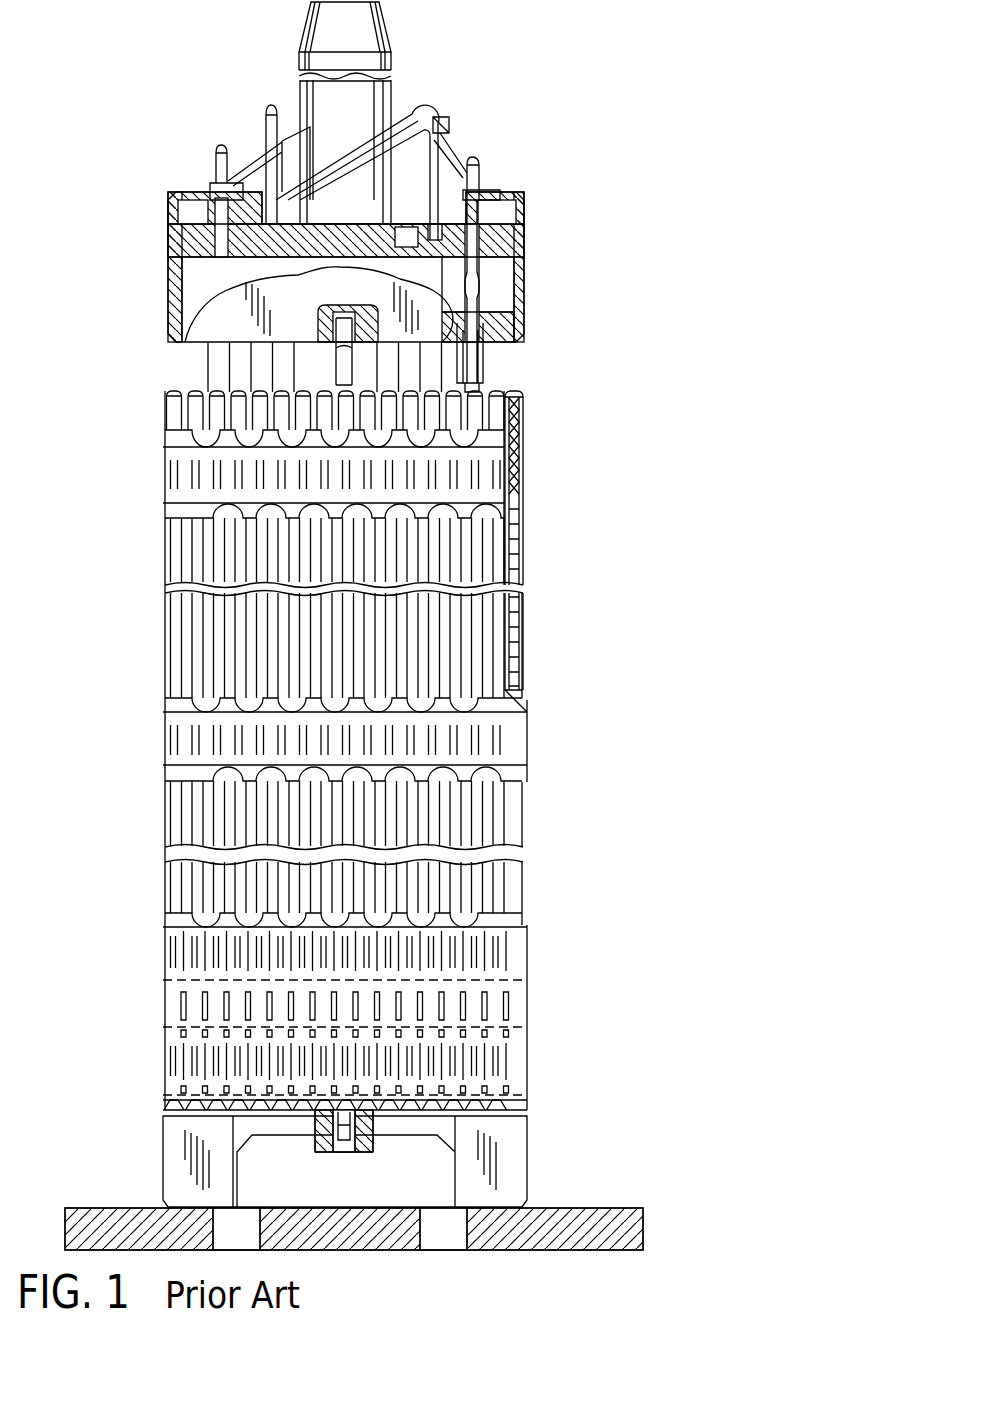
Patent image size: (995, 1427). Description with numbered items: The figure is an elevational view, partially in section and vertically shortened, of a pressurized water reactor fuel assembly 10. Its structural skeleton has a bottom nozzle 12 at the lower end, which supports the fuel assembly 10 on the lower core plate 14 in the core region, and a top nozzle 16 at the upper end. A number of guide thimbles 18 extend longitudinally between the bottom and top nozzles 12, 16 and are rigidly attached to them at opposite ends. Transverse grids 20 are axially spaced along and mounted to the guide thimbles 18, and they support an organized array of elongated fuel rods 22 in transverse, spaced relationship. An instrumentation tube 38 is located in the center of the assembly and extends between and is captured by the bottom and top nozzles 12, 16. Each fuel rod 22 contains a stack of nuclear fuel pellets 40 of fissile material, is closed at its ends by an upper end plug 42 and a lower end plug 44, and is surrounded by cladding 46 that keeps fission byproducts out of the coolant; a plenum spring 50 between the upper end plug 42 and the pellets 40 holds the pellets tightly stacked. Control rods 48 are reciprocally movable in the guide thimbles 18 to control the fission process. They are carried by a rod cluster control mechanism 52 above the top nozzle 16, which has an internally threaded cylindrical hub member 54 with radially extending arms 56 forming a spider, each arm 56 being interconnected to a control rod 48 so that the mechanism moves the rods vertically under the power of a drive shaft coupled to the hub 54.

The fuel assembly 10 is at (608, 255).
The bottom nozzle 12 is at (532, 1155).
The lower core plate 14 is at (567, 1207).
The top nozzle 16 is at (527, 242).
The guide thimbles 18 is at (195, 372).
The transverse grids 20 is at (163, 485).
The fuel rods 22 is at (163, 650).
The instrumentation tube 38 is at (345, 1125).
The nuclear fuel pellets 40 is at (527, 550).
The upper end plug 42 is at (527, 397).
The lower end plug 44 is at (530, 1098).
The cladding 46 is at (525, 607).
The control rods 48 is at (483, 305).
The plenum spring 50 is at (527, 460).
The rod cluster control mechanism 52 is at (442, 107).
The cylindrical hub member 54 is at (393, 83).
The arms 56 is at (252, 156).